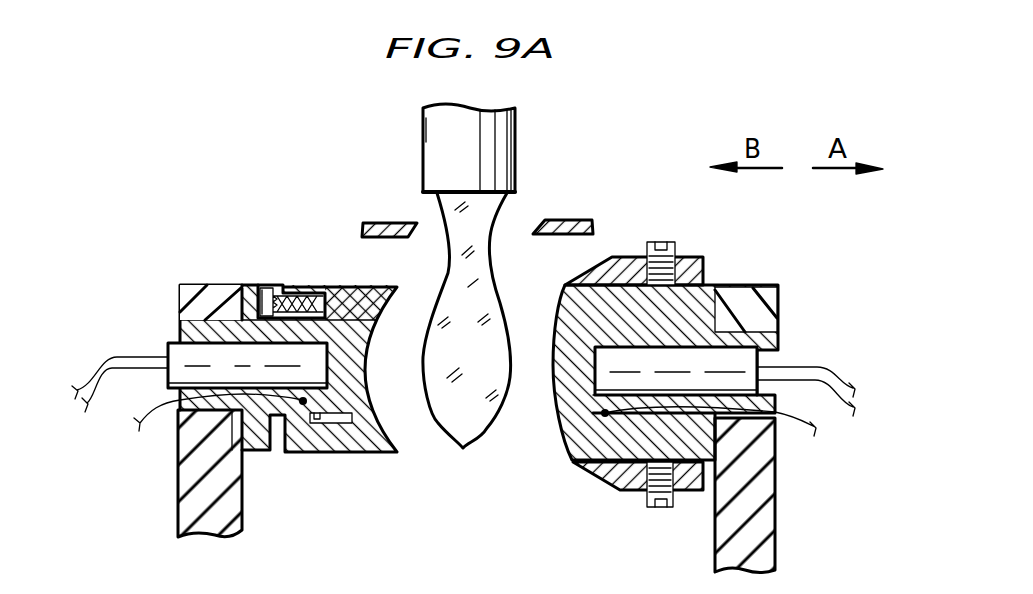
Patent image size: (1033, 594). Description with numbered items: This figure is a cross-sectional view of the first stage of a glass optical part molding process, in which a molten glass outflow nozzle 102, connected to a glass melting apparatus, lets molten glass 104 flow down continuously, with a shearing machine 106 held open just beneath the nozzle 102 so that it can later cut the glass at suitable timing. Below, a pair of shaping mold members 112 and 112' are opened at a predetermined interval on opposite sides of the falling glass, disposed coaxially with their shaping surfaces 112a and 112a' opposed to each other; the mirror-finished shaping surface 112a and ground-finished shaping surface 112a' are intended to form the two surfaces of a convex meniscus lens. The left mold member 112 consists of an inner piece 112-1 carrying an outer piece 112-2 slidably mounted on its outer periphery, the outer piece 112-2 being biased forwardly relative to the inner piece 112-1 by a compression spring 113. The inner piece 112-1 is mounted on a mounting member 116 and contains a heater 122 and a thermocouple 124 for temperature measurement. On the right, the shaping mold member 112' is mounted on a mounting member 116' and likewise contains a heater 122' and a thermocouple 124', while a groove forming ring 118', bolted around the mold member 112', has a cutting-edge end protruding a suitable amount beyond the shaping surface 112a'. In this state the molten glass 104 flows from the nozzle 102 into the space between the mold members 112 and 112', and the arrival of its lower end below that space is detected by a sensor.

The molten glass outflow nozzle 102 is at (492, 142).
The molten glass 104 is at (483, 220).
The shearing machine 106 is at (390, 222).
The shaping mold member 112 is at (328, 419).
The inner piece 112-1 is at (335, 453).
The outer piece 112-2 is at (333, 453).
The shaping surface 112a is at (411, 388).
The compression spring 113 is at (276, 287).
The mounting member 116 is at (184, 473).
The heater 122 is at (199, 352).
The thermocouple 124 is at (243, 446).
The shaping mold member 112' is at (636, 396).
The shaping surface 112a' is at (527, 458).
The mounting member 116' is at (782, 495).
The groove forming ring 118' is at (621, 506).
The heater 122' is at (726, 361).
The thermocouple 124' is at (654, 428).